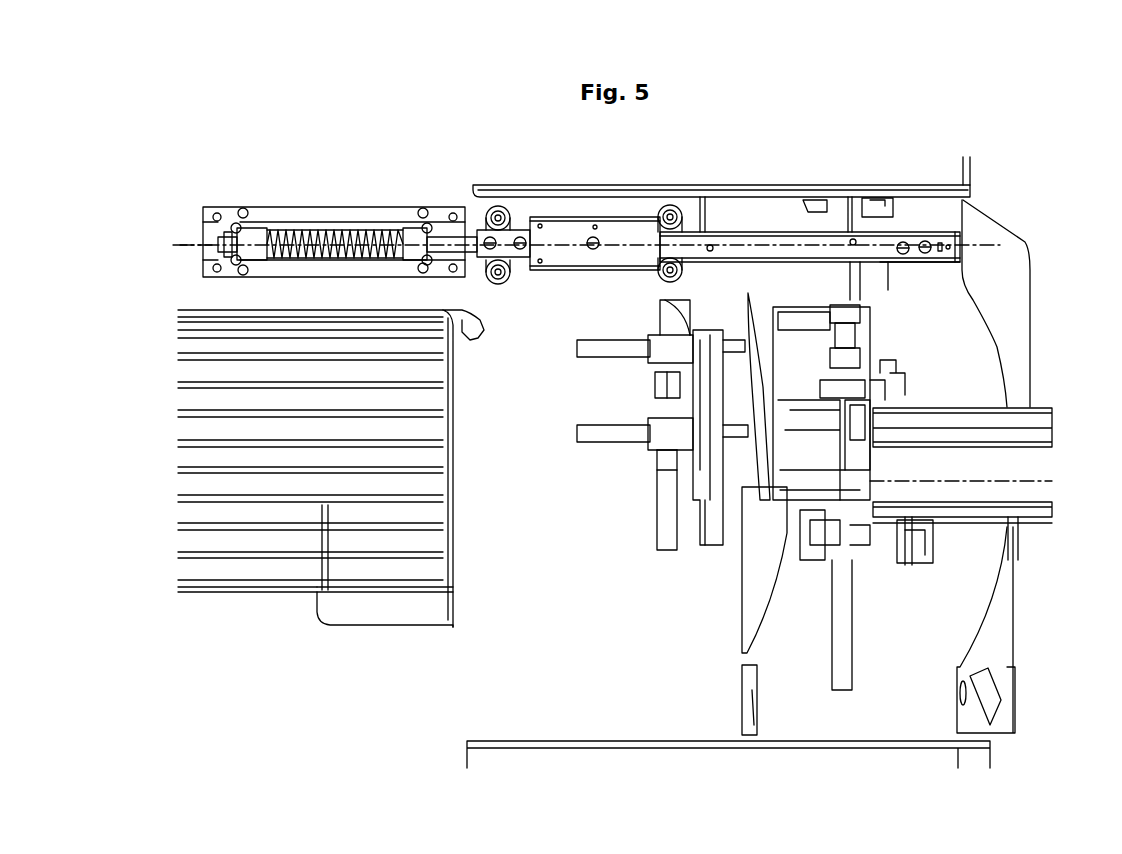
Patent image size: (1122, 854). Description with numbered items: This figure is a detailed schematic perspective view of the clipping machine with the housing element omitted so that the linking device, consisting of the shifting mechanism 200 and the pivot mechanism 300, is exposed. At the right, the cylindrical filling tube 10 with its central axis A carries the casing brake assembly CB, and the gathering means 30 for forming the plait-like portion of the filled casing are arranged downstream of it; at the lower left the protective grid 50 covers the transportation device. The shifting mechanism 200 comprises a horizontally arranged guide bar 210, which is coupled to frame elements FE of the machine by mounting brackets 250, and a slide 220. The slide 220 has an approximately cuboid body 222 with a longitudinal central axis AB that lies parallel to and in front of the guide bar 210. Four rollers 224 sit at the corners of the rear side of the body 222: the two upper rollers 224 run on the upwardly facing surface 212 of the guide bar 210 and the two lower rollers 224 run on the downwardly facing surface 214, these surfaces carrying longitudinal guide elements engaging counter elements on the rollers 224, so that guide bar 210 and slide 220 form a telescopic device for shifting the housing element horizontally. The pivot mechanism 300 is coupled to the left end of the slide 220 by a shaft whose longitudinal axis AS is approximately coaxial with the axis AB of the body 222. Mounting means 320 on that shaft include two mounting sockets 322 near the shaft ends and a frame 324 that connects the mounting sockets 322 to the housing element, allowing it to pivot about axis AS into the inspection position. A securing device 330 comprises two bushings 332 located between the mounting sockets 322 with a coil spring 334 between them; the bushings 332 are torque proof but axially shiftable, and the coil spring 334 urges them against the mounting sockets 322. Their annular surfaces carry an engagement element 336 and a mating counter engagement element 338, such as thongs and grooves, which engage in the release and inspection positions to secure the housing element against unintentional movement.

The filling tube 10 is at (1020, 488).
The gathering means 30 is at (670, 437).
The protective grid 50 is at (222, 500).
The shifting mechanism 200 is at (733, 148).
The guide bar 210 is at (878, 240).
The upwardly facing surface 212 is at (955, 238).
The downwardly facing surface 214 is at (923, 260).
The slide 220 is at (587, 194).
The body 222 is at (582, 233).
The rollers 224 is at (500, 263).
The mounting brackets 250 is at (867, 268).
The pivot mechanism 300 is at (302, 229).
The mounting means 320 is at (221, 144).
The mounting sockets 322 is at (227, 233).
The frame 324 is at (355, 225).
The securing device 330 is at (122, 387).
The bushings 332 is at (420, 250).
The coil spring 334 is at (305, 232).
The engagement element 336 is at (412, 233).
The counter engagement element 338 is at (423, 228).
The central axis A is at (1030, 480).
The central axis AB is at (582, 247).
The longitudinal axis AS is at (167, 226).
The casing brake assembly CB is at (800, 490).
The frame elements FE is at (695, 210).